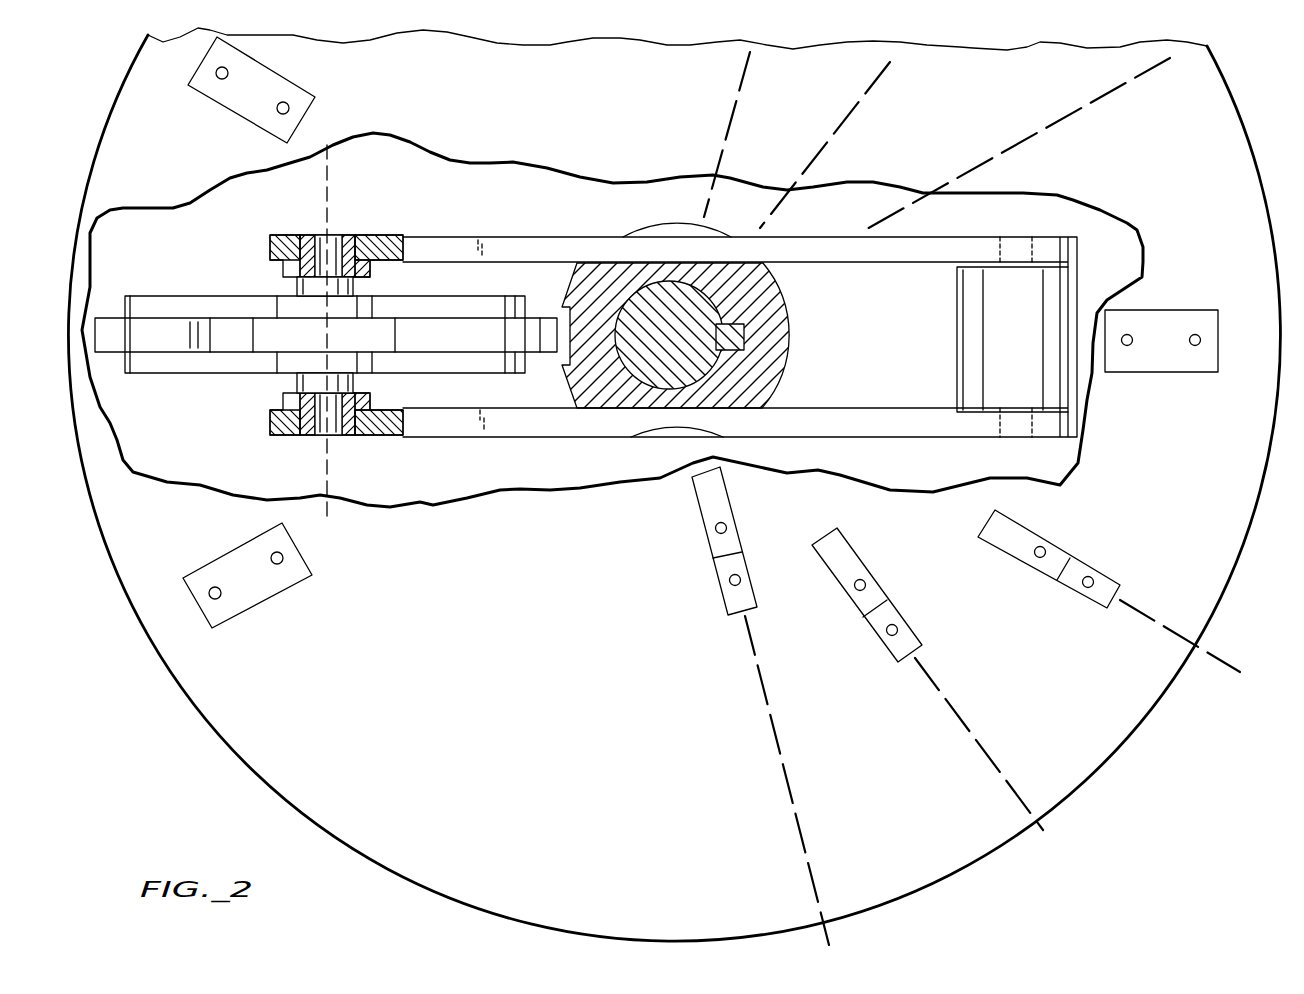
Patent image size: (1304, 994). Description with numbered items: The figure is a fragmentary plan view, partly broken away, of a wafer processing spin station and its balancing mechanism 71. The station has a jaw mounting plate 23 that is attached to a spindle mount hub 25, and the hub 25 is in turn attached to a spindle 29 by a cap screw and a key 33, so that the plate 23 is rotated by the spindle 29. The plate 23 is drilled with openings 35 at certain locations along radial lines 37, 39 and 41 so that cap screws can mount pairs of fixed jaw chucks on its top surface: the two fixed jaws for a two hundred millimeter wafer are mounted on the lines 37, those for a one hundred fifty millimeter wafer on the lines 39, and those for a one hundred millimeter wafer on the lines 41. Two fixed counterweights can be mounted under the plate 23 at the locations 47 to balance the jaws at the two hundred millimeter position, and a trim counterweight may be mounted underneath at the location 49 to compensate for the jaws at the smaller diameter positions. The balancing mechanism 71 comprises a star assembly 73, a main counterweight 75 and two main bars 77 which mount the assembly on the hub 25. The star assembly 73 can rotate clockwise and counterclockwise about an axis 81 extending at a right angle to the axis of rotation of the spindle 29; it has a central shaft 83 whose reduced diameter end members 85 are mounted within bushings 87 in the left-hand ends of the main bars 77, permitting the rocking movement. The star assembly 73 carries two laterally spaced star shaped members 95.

The jaw mounting plate 23 is at (1215, 132).
The spindle mount hub 25 is at (757, 288).
The spindle 29 is at (710, 363).
The key 33 is at (740, 338).
The openings 35 is at (727, 528).
The radial lines 37 is at (1082, 112).
The radial lines 39 is at (847, 117).
The radial lines 41 is at (738, 118).
The fixed counterweight locations 47 is at (263, 83).
The trim counterweight location 49 is at (1152, 315).
The balancing mechanism 71 is at (150, 158).
The star assembly 73 is at (175, 285).
The main counterweight 75 is at (1067, 283).
The main bars 77 is at (458, 238).
The axis 81 is at (330, 178).
The central shaft 83 is at (355, 287).
The reduced diameter end members 85 is at (330, 235).
The bushings 87 is at (347, 240).
The star shaped members 95 is at (237, 297).